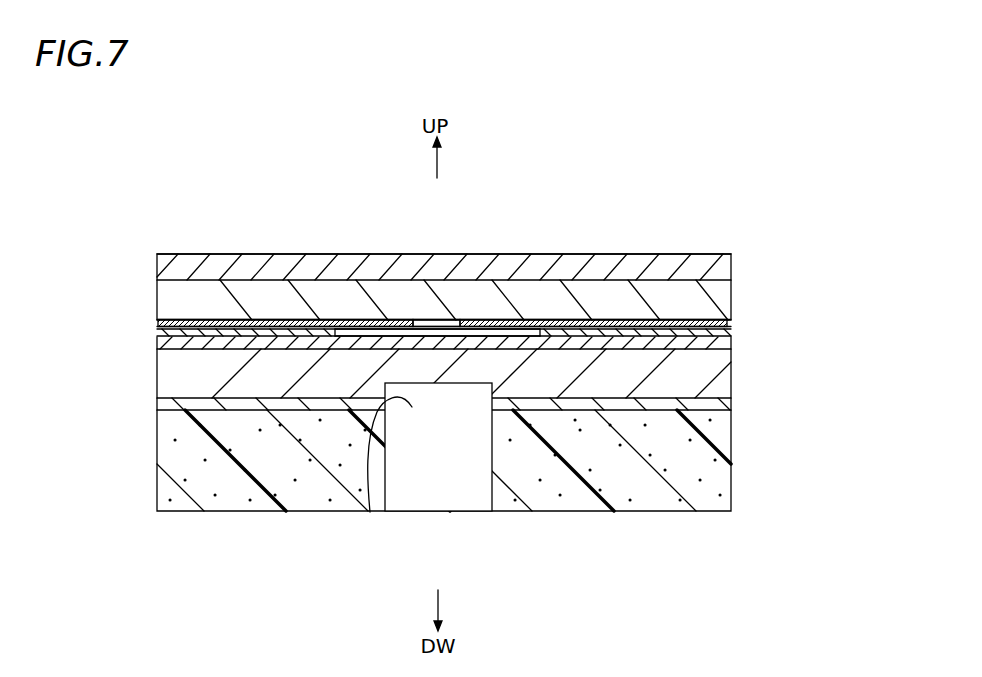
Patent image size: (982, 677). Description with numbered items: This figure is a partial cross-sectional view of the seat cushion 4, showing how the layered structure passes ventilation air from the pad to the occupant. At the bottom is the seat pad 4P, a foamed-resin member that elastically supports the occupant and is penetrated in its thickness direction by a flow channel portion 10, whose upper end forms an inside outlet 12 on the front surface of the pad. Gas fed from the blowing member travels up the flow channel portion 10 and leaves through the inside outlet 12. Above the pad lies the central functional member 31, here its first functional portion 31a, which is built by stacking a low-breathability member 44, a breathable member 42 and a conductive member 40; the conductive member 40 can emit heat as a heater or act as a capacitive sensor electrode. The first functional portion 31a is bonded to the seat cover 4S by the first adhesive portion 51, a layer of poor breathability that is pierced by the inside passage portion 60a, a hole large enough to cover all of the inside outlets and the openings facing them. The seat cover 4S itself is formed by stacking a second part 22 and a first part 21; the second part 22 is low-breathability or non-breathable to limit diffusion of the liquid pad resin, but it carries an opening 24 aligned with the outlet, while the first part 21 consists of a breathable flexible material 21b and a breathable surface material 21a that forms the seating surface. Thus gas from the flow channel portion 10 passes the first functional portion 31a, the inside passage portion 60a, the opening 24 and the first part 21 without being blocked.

The seat cushion 4 is at (716, 204).
The seat cover 4S is at (611, 250).
The seat pad 4P is at (625, 476).
The flow channel portion 10 is at (435, 470).
The inside outlet 12 is at (370, 512).
The first part 21 is at (82, 252).
The surface material 21a is at (157, 271).
The flexible material 21b is at (172, 300).
The second part 22 is at (157, 325).
The opening 24 is at (434, 326).
The central functional member 31 is at (494, 275).
The first functional portion 31a is at (717, 334).
The conductive member 40 is at (157, 343).
The breathable member 42 is at (167, 373).
The low-breathability member 44 is at (157, 402).
The first adhesive portion 51 is at (722, 323).
The inside passage portion 60a is at (482, 335).